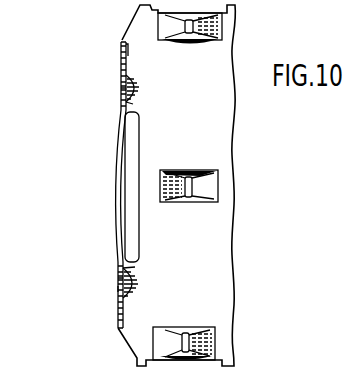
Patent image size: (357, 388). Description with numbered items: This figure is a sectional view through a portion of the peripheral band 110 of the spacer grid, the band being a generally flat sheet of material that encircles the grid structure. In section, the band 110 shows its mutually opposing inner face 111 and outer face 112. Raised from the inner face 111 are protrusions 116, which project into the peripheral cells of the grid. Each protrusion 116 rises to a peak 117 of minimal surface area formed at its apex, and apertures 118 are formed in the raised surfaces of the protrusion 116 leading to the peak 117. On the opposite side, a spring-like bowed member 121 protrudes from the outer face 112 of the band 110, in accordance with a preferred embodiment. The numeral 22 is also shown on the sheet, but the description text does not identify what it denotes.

The housing member 22 is at (140, 26).
The peripheral band 110 is at (118, 288).
The inner face 111 is at (128, 58).
The outer face 112 is at (120, 50).
The protrusion 116 is at (133, 104).
The peak 117 is at (140, 82).
The aperture 118 is at (124, 88).
The bowed member 121 is at (115, 148).